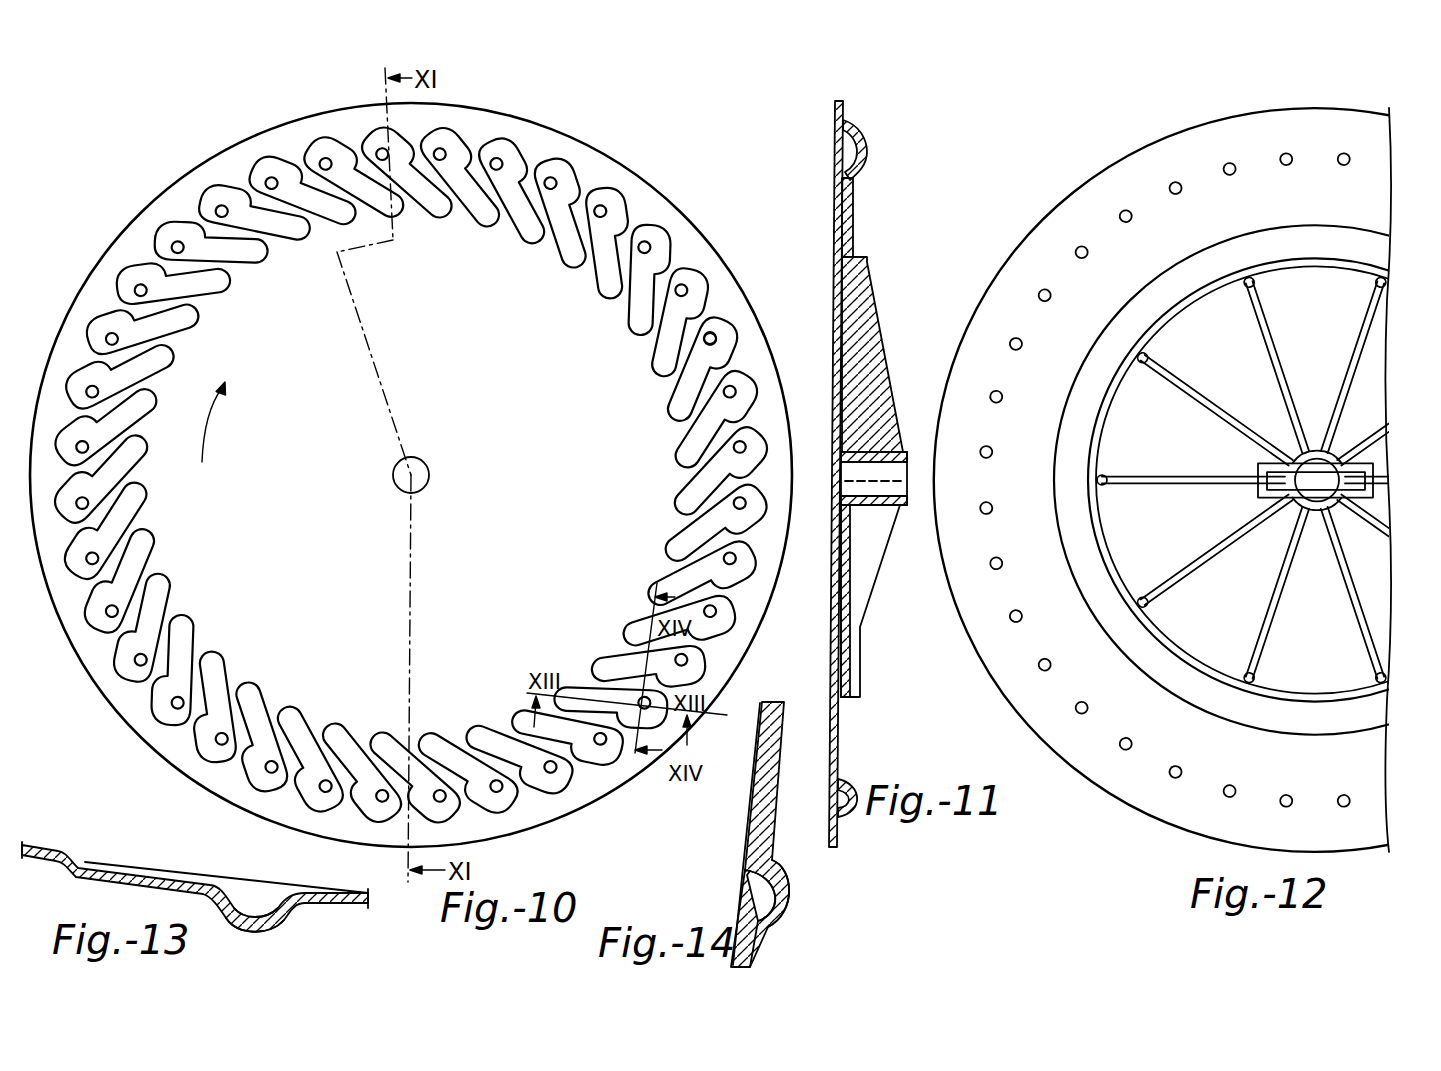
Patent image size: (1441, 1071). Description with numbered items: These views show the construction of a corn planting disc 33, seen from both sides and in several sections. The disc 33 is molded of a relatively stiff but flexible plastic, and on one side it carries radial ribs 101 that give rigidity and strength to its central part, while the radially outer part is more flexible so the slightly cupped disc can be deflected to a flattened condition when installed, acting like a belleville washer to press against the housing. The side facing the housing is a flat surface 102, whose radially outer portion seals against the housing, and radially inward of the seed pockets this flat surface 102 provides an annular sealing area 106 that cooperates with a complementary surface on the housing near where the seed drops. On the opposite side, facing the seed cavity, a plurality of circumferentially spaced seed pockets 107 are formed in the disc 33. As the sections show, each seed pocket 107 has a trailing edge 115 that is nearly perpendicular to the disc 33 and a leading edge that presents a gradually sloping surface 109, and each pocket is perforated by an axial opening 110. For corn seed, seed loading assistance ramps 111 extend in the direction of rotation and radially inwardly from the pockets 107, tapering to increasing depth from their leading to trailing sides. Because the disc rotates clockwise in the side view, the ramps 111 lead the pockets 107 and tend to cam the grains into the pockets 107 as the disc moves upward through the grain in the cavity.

In FIG. 10, the corn planting disc 33 is at (411, 475).
In FIG. 11, the corn planting disc 33 is at (839, 471).
In FIG. 12, the corn planting disc 33 is at (1068, 200).
In FIG. 13, the corn planting disc 33 is at (76, 879).
In FIG. 14, the corn planting disc 33 is at (775, 830).
In FIG. 12, the radial ribs 101 is at (1283, 387).
In FIG. 10, the flat surface 102 is at (650, 192).
In FIG. 11, the flat surface 102 is at (835, 110).
In FIG. 10, the annular sealing area 106 is at (640, 447).
In FIG. 10, the seed pockets 107 is at (563, 172).
In FIG. 13, the seed pockets 107 is at (276, 908).
In FIG. 14, the seed pockets 107 is at (770, 922).
In FIG. 14, the gradually sloping surface 109 is at (756, 925).
In FIG. 10, the axial opening 110 is at (712, 334).
In FIG. 12, the axial opening 110 is at (1230, 172).
In FIG. 13, the axial opening 110 is at (258, 928).
In FIG. 14, the axial opening 110 is at (791, 899).
In FIG. 10, the seed loading assistance ramps 111 is at (332, 740).
In FIG. 13, the seed loading assistance ramps 111 is at (164, 866).
In FIG. 14, the seed loading assistance ramps 111 is at (767, 737).
In FIG. 14, the trailing edge 115 is at (746, 876).